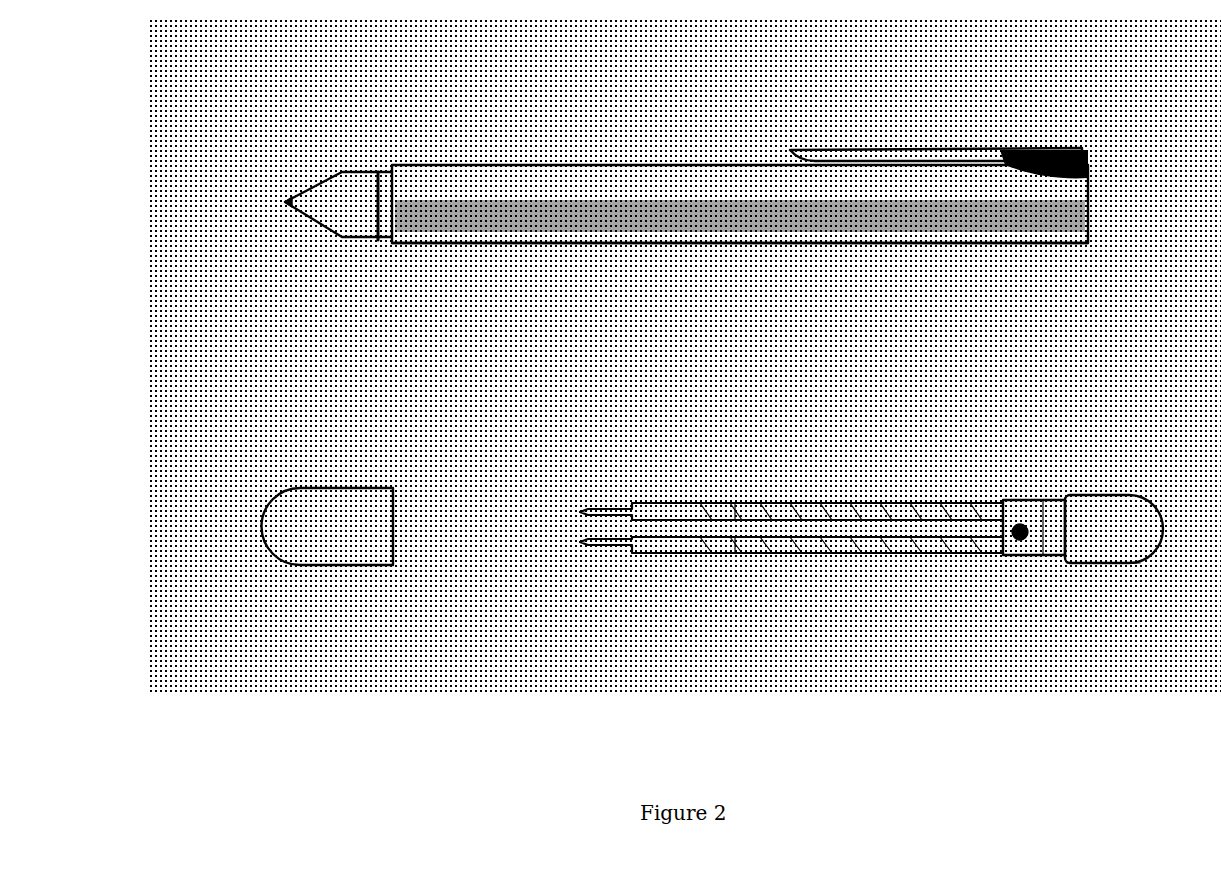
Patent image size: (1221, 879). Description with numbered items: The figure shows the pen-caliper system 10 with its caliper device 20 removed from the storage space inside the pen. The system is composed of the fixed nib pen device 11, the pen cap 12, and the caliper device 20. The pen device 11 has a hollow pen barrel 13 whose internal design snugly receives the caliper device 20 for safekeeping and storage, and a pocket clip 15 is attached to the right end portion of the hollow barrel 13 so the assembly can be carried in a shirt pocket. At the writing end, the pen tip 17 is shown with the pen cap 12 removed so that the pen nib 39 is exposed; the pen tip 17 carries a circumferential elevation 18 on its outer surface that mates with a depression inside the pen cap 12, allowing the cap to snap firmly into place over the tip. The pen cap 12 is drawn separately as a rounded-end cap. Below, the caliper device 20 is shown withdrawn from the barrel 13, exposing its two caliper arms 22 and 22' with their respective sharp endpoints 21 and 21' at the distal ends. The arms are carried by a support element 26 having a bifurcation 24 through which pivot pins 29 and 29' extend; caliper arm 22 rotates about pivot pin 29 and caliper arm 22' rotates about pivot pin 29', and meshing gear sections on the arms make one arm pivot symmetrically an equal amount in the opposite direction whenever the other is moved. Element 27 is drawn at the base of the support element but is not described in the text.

The pen-caliper system 10 is at (686, 163).
The fixed nib pen device 11 is at (807, 246).
The pen barrel 13 is at (670, 212).
The pocket clip 15 is at (1000, 147).
The pen tip 17 is at (337, 194).
The circumferential elevation 18 is at (377, 234).
The pen nib 39 is at (285, 202).
The pen cap 12 is at (335, 520).
The caliper device 20 is at (835, 497).
The sharp endpoint 21 is at (769, 483).
The sharp endpoint 21' is at (769, 573).
The caliper arm 22 is at (683, 482).
The caliper arm 22' is at (684, 576).
The bifurcation 24 is at (1023, 505).
The pivot pin 29 is at (1069, 496).
The pivot pin 29' is at (1054, 585).
The support element 26 is at (1117, 490).
The end cap base 27 is at (1067, 562).